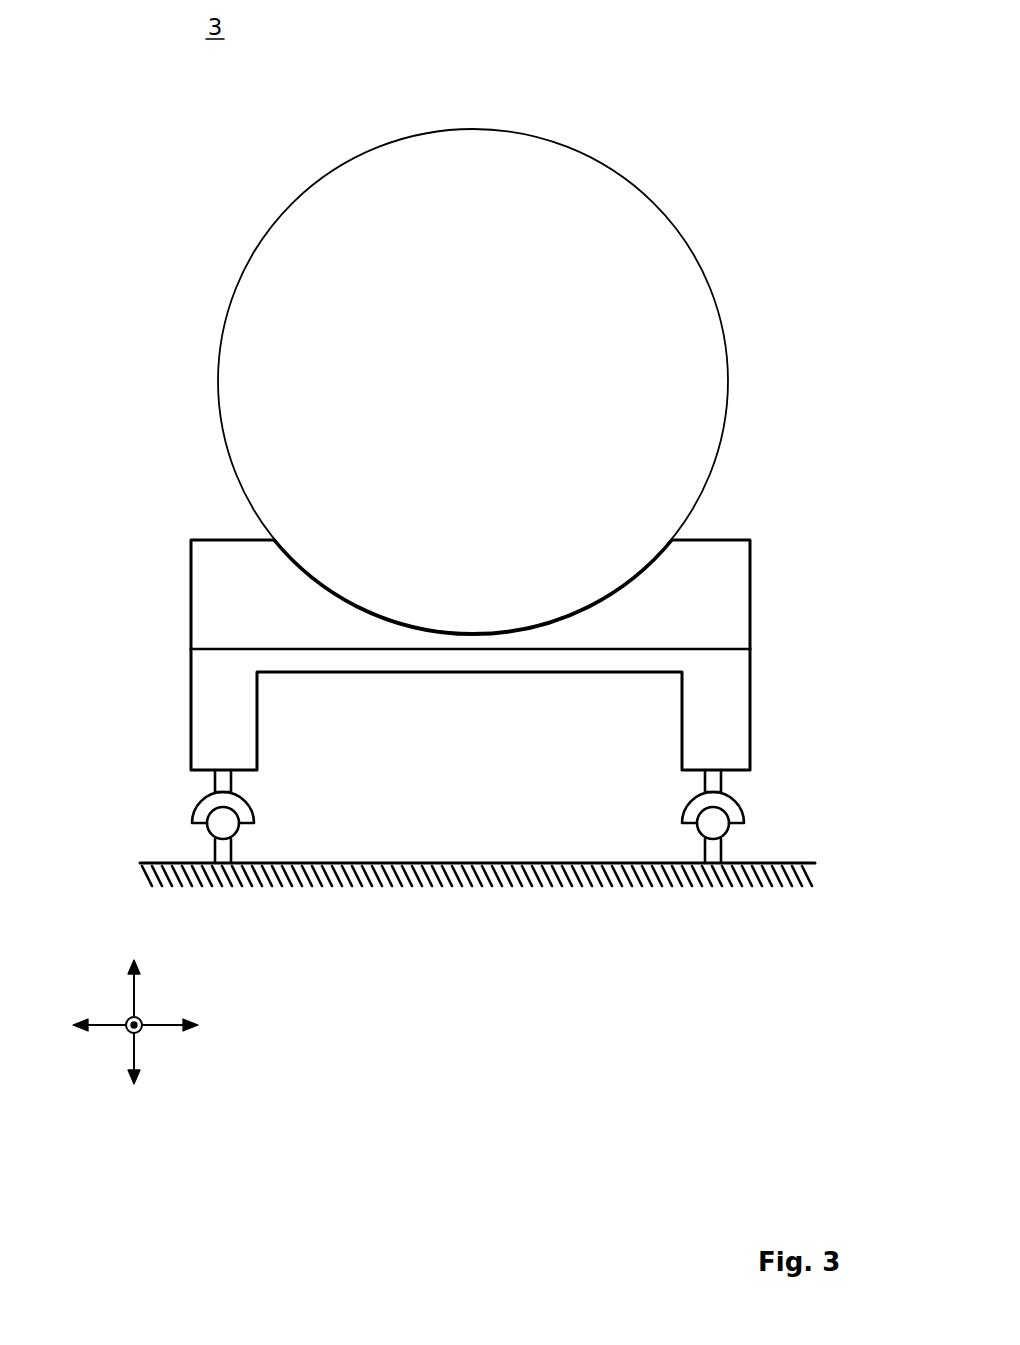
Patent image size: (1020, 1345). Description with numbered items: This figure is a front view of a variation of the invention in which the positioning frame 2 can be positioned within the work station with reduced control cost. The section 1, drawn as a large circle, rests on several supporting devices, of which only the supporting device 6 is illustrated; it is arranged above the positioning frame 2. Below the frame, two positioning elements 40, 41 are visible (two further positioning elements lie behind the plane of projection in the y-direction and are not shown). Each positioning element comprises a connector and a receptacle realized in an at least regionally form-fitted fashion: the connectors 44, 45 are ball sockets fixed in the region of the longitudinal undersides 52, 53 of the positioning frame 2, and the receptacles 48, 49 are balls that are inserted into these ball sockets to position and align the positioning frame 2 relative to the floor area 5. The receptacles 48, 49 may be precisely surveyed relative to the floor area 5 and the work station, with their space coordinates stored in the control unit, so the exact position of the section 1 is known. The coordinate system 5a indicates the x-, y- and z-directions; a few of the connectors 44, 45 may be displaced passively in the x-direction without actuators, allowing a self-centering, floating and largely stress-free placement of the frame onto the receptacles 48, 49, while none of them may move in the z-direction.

The section 1 is at (565, 143).
The positioning frame 2 is at (516, 651).
The supporting device 6 is at (733, 550).
The floor area 5 is at (817, 862).
The coordinate system 5a is at (135, 1057).
The positioning element 40 is at (131, 776).
The positioning element 41 is at (804, 777).
The connector 44 is at (192, 822).
The connector 45 is at (743, 813).
The receptacle 48 is at (222, 828).
The receptacle 49 is at (716, 825).
The longitudinal underside 52 is at (219, 745).
The longitudinal underside 53 is at (720, 747).